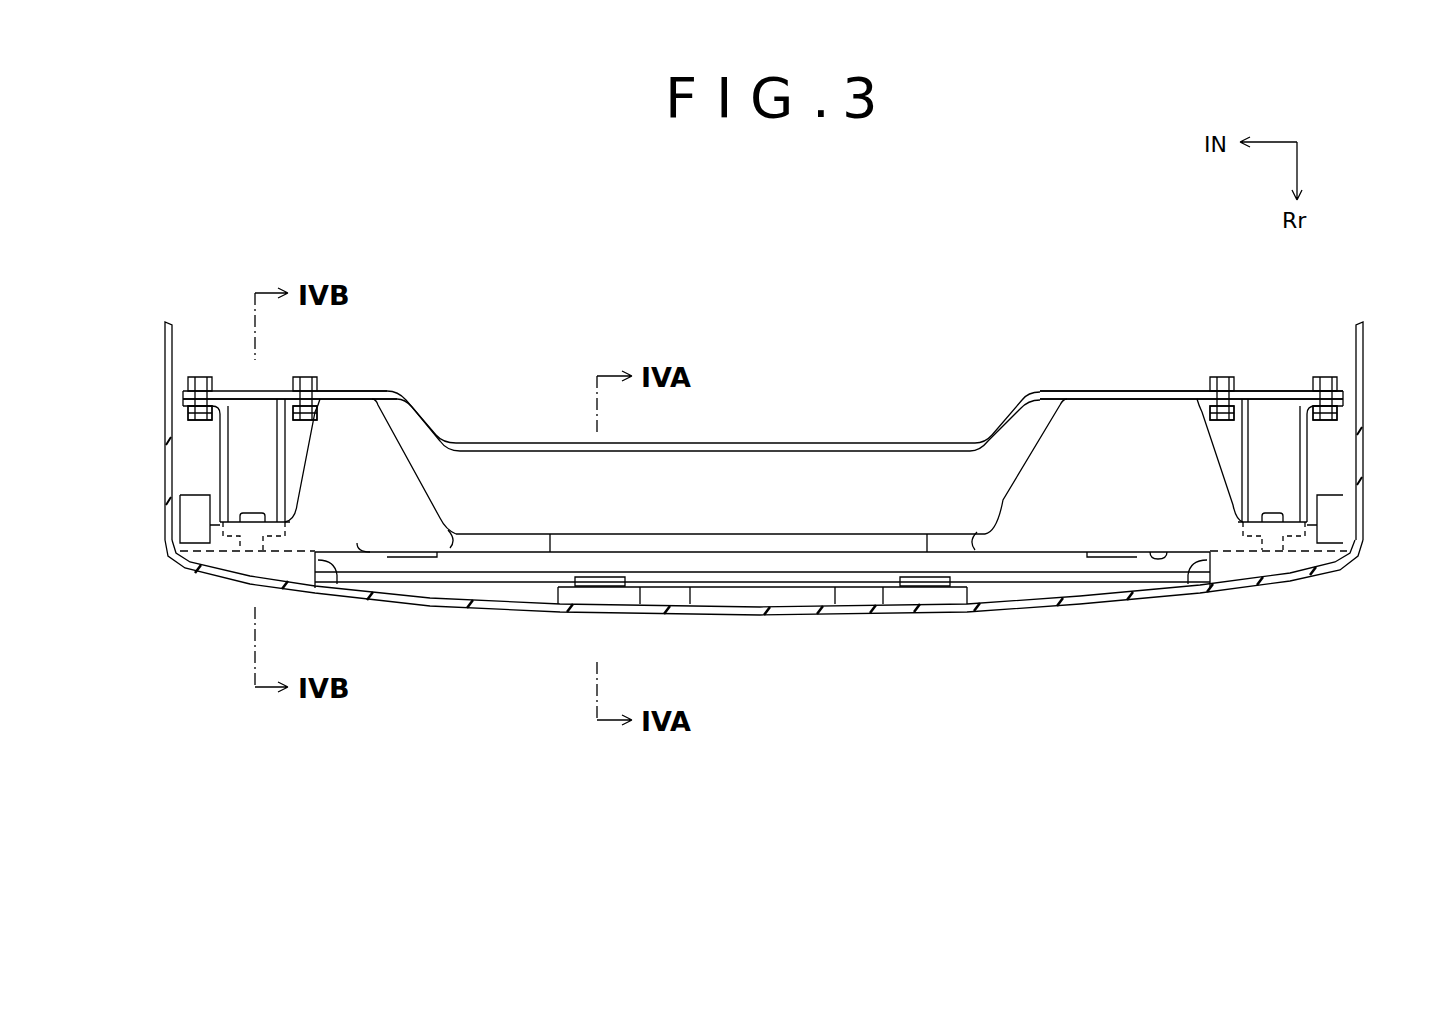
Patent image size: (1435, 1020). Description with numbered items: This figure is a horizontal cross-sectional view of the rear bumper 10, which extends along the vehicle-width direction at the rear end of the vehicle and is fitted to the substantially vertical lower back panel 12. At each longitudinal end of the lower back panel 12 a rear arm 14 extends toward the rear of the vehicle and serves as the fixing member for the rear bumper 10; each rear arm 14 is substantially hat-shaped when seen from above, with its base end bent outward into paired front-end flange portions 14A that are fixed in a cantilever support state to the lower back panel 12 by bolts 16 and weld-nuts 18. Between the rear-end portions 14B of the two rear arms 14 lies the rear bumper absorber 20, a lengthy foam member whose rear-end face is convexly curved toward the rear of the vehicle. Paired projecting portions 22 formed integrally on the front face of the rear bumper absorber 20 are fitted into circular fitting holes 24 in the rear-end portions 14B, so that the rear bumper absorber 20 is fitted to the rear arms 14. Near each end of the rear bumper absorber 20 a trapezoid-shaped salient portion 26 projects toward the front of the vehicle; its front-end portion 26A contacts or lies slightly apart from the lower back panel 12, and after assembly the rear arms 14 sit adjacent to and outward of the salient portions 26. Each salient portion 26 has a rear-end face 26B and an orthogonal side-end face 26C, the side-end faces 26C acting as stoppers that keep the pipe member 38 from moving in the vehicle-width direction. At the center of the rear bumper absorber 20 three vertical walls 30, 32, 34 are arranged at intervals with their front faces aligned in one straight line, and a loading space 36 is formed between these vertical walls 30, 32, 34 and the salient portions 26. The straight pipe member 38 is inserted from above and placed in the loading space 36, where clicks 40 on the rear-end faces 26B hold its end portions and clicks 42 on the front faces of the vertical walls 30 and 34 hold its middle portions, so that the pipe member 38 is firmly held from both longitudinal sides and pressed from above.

The rear bumper 10 is at (894, 700).
The lower back panel 12 is at (838, 443).
The rear arm 14 is at (208, 480).
The front-end flange portion 14A is at (186, 399).
The rear-end portion 14B is at (235, 553).
The bolt 16 is at (200, 376).
The weld-nut 18 is at (188, 388).
The rear bumper absorber 20 is at (679, 524).
The projecting portion 22 is at (253, 512).
The circular fitting hole 24 is at (258, 553).
The salient portion 26 is at (449, 513).
The front-end portion 26A is at (380, 391).
The rear-end face 26B is at (357, 545).
The side-end face 26C is at (335, 568).
The vertical wall 30 is at (578, 600).
The vertical wall 32 is at (785, 600).
The vertical wall 34 is at (945, 600).
The loading space 36 is at (500, 562).
The pipe member 38 is at (762, 552).
The click 40 is at (405, 558).
The click 42 is at (600, 577).